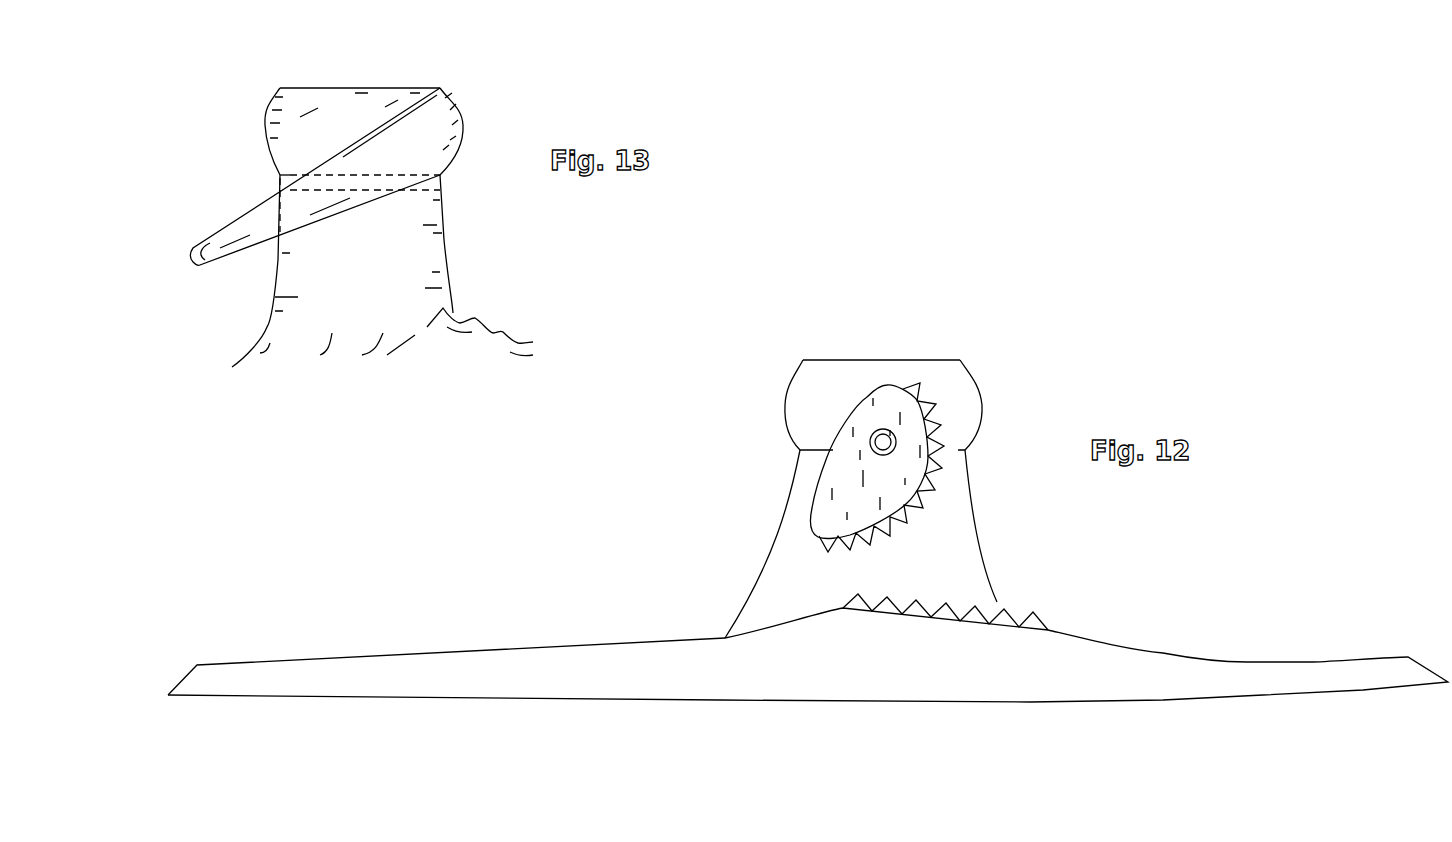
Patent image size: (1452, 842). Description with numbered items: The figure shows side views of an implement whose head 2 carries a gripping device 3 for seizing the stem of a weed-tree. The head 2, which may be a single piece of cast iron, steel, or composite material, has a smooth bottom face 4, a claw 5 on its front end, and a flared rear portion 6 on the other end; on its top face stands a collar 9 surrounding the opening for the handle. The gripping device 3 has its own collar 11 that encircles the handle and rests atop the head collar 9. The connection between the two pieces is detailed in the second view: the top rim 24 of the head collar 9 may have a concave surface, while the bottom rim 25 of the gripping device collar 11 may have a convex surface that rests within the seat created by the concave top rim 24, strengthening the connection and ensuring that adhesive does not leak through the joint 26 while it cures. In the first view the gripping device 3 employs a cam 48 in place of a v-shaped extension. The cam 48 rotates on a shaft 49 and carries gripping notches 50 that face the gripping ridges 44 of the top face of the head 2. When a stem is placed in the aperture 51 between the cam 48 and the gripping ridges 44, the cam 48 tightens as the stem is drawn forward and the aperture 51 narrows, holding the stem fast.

In FIG. 12, the head 2 is at (808, 526).
In FIG. 13, the gripping device 3 is at (355, 220).
In FIG. 12, the gripping device 3 is at (879, 442).
In FIG. 12, the smooth bottom face 4 is at (808, 673).
In FIG. 12, the claw 5 is at (1048, 710).
In FIG. 12, the flared rear portion 6 is at (177, 707).
In FIG. 13, the collar 9 is at (470, 257).
In FIG. 12, the collar 9 is at (778, 522).
In FIG. 13, the collar 11 is at (272, 107).
In FIG. 12, the collar 11 is at (803, 359).
In FIG. 13, the top rim 24 is at (353, 176).
In FIG. 13, the bottom rim 25 is at (402, 185).
In FIG. 13, the joint 26 is at (438, 188).
In FIG. 12, the gripping ridges 44 is at (886, 589).
In FIG. 12, the cam 48 is at (921, 431).
In FIG. 12, the shaft 49 is at (881, 438).
In FIG. 12, the gripping notches 50 is at (930, 473).
In FIG. 12, the aperture 51 is at (935, 599).